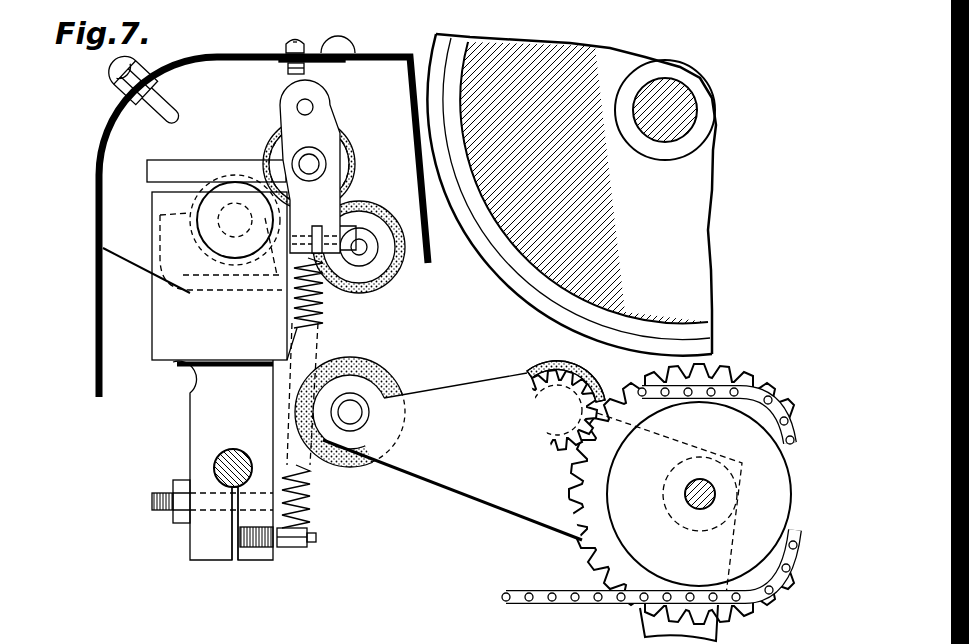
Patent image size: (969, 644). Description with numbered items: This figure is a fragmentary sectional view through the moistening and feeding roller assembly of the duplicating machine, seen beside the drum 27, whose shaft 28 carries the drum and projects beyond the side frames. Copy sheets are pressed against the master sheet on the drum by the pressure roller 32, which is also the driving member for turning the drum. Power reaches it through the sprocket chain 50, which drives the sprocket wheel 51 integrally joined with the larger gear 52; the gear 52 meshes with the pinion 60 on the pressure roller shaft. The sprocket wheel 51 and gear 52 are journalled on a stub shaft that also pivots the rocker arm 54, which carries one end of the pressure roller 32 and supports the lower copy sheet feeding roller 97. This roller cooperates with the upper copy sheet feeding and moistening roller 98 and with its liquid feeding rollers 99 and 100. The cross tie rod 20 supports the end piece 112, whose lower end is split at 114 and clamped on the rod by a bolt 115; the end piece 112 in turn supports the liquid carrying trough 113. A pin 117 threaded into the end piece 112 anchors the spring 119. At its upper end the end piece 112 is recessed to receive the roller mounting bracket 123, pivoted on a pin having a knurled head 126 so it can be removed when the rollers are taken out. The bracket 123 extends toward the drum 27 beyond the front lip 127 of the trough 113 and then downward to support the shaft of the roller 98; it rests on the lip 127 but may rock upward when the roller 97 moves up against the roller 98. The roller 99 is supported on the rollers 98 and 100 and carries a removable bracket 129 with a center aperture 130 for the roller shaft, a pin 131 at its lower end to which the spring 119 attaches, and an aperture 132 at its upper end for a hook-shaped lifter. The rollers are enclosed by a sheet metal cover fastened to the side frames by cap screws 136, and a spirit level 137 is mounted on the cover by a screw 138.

The cross tie rod 20 is at (213, 466).
The drum 27 is at (518, 298).
The shaft 28 is at (688, 105).
The pressure roller 32 is at (543, 368).
The sprocket chain 50 is at (535, 604).
The sprocket wheel 51 is at (622, 532).
The gear 52 is at (584, 519).
The rocker arm 54 is at (545, 505).
The pinion 60 is at (541, 445).
The lower copy sheet feeding roller 97 is at (372, 368).
The upper copy sheet feeding and moistening roller 98 is at (383, 284).
The liquid feeding roller 99 is at (352, 150).
The liquid feeding roller 100 is at (212, 205).
The end piece 112 is at (205, 398).
The liquid carrying trough 113 is at (158, 260).
The split 114 is at (235, 562).
The bolt 115 is at (157, 497).
The pin 117 is at (287, 548).
The spring 119 is at (320, 322).
The roller mounting bracket 123 is at (214, 166).
The knurled head 126 is at (205, 218).
The front lip 127 is at (278, 292).
The removable bracket 129 is at (333, 116).
The center aperture 130 is at (300, 163).
The pin 131 is at (315, 225).
The aperture 132 is at (298, 110).
The cap screw 136 is at (135, 62).
The spirit level 137 is at (345, 42).
The screw 138 is at (292, 44).